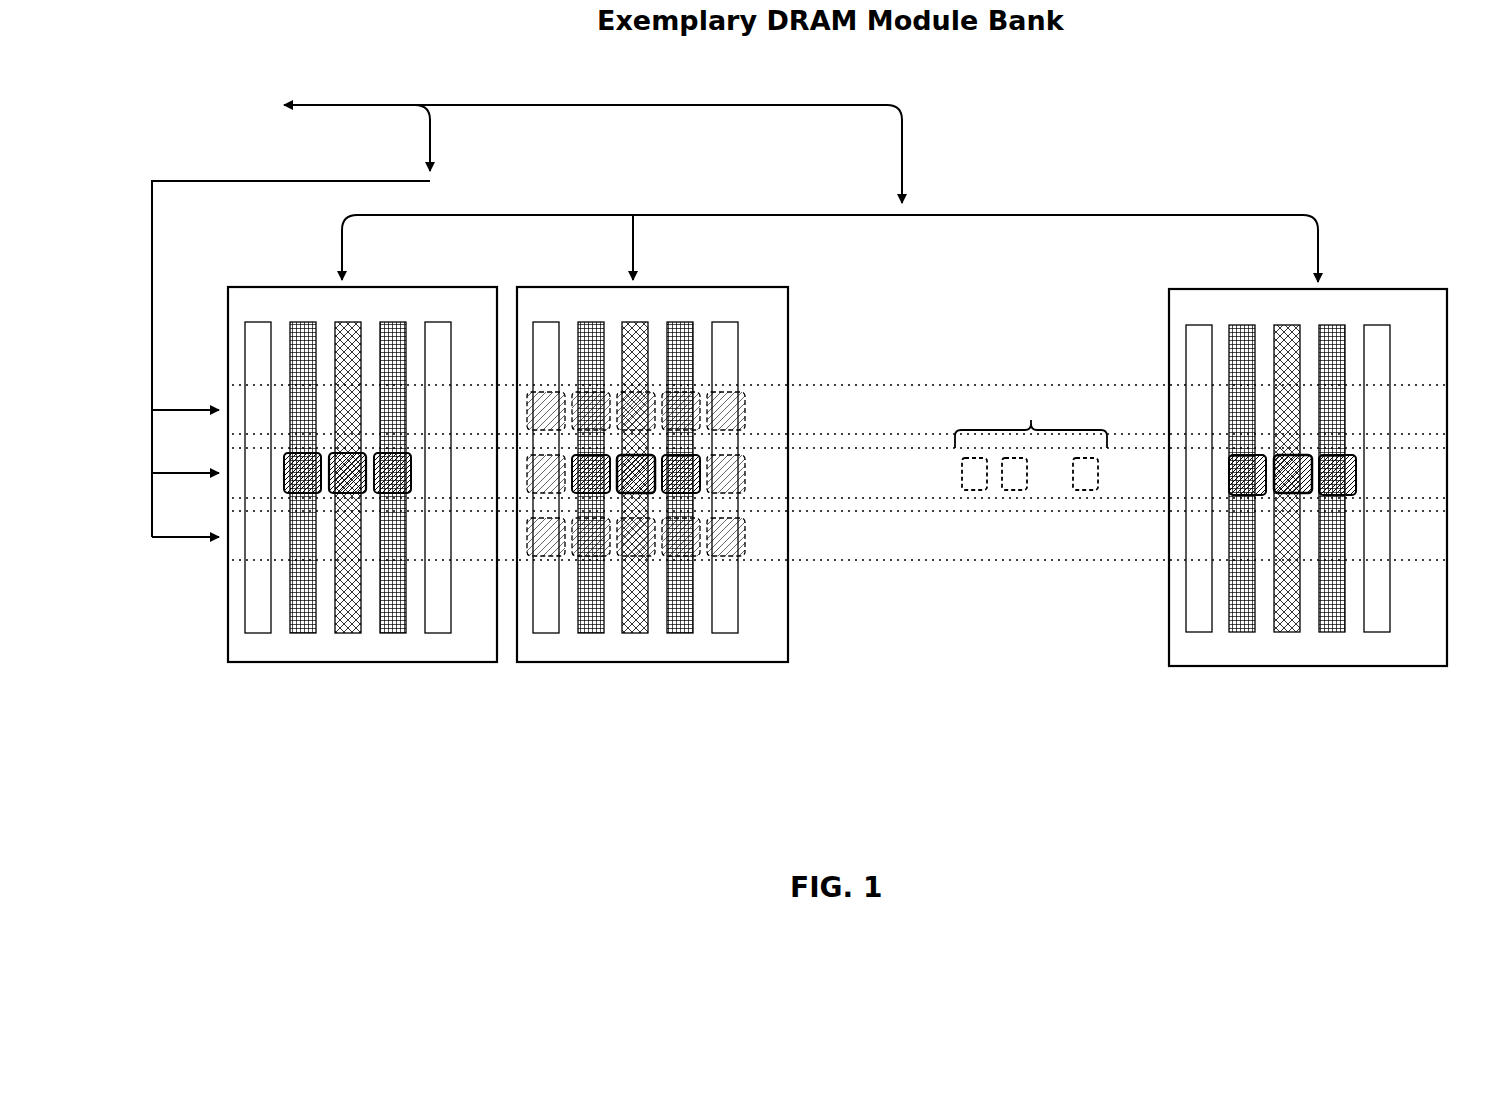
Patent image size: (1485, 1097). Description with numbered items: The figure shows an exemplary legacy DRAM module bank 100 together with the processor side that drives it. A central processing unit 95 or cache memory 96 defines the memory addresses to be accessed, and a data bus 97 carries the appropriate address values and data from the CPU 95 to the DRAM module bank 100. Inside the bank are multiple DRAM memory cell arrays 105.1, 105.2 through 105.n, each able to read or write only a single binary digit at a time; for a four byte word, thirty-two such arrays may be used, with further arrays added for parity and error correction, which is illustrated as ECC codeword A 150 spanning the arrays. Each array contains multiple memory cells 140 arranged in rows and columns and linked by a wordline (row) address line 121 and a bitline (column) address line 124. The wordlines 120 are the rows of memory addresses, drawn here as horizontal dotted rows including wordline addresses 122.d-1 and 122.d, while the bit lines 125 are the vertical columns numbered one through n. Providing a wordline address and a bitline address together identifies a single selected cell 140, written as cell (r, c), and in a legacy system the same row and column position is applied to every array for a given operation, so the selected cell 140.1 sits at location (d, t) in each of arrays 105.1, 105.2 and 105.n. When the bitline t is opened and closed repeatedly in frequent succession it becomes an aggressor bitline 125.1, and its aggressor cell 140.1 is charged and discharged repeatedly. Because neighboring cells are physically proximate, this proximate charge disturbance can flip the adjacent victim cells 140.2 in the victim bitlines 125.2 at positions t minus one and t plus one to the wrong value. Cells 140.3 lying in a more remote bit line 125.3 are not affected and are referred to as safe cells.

The DRAM module bank 100 is at (156, 72).
The central processing unit 95 is at (239, 91).
The cache memory 96 is at (262, 121).
The data bus 97 is at (593, 142).
The wordline (row) address line 121 is at (263, 347).
The bitline (column) address line 124 is at (830, 237).
The DRAM memory cell array 105.1 is at (362, 463).
The DRAM memory cell array 105.2 is at (652, 463).
The DRAM memory cell array 105.n is at (1308, 465).
The wordline address 122.d-1 is at (190, 394).
The wordline address 122.d is at (181, 456).
The wordlines 120 is at (935, 482).
The bit lines 125 is at (438, 633).
The aggressor bitline 125.1 is at (633, 633).
The victim bitline 125.2 is at (590, 633).
The bit line 125.3 is at (718, 626).
The memory cell 140 is at (345, 492).
The aggressor memory cell 140.1 is at (645, 460).
The victim memory cell 140.2 is at (590, 470).
The safe cell 140.3 is at (735, 490).
The ECC codeword A 150 is at (1031, 424).